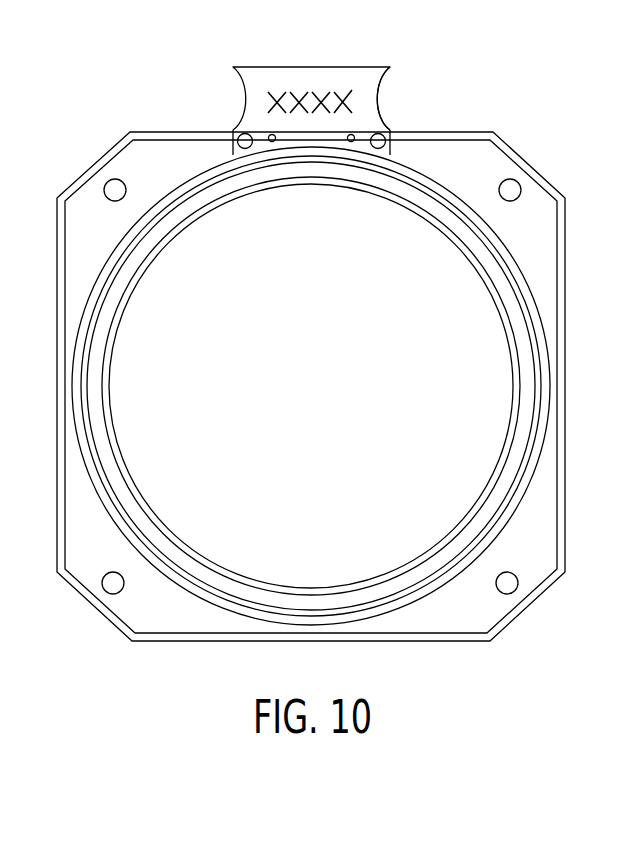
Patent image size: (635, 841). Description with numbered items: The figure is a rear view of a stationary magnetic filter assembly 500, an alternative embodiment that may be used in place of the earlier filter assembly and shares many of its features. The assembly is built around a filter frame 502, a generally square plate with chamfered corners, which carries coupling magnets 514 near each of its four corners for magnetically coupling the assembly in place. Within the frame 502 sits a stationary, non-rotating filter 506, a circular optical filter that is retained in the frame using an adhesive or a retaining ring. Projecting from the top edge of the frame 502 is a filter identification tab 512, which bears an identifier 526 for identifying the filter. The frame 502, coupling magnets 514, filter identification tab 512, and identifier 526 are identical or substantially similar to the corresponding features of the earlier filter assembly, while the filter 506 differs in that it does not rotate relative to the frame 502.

The stationary filter assembly 500 is at (58, 128).
The filter frame 502 is at (436, 131).
The stationary filter 506 is at (527, 378).
The filter identification tab 512 is at (314, 67).
The coupling magnets 514 is at (113, 185).
The identifier 526 is at (378, 92).